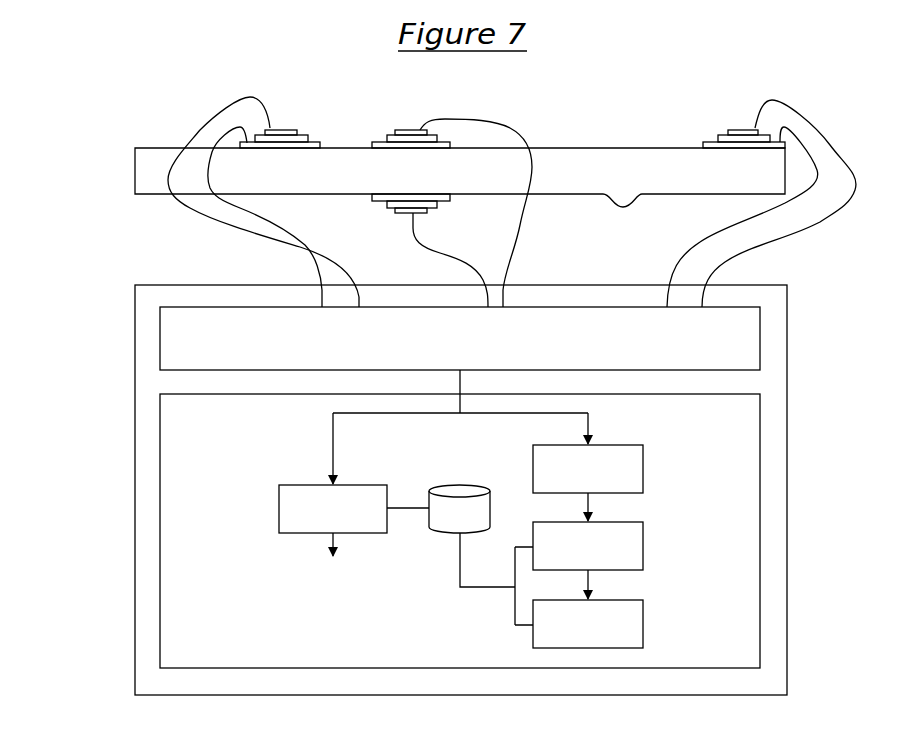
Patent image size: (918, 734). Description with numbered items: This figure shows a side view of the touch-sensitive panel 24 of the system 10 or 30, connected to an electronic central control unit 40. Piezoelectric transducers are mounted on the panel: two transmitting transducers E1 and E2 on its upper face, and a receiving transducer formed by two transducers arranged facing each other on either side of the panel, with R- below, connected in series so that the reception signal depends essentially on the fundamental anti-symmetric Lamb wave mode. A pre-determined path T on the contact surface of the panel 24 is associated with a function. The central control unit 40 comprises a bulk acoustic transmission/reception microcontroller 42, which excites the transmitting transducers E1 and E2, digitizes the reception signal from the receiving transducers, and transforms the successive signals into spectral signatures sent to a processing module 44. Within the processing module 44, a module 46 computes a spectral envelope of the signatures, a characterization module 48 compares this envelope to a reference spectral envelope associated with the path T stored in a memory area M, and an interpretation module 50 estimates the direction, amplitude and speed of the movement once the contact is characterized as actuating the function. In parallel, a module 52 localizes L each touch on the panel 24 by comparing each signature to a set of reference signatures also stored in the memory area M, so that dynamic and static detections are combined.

The device 10 is at (110, 128).
The system 30 is at (495, 190).
The touch-sensitive panel 24 is at (634, 184).
The pre-determined path T is at (606, 199).
The transmitting transducer E1 is at (288, 130).
The transmitting transducer E2 is at (735, 129).
The receiving transducer R- is at (387, 207).
The electronic central control unit 40 is at (787, 408).
The transmission/reception microcontroller 42 is at (476, 349).
The processing module 44 is at (160, 450).
The spectral envelope computation module 46 is at (602, 480).
The characterization module 48 is at (602, 557).
The interpretation module 50 is at (602, 635).
The localization module 52 is at (347, 520).
The memory area M is at (469, 527).
The localization L is at (332, 559).